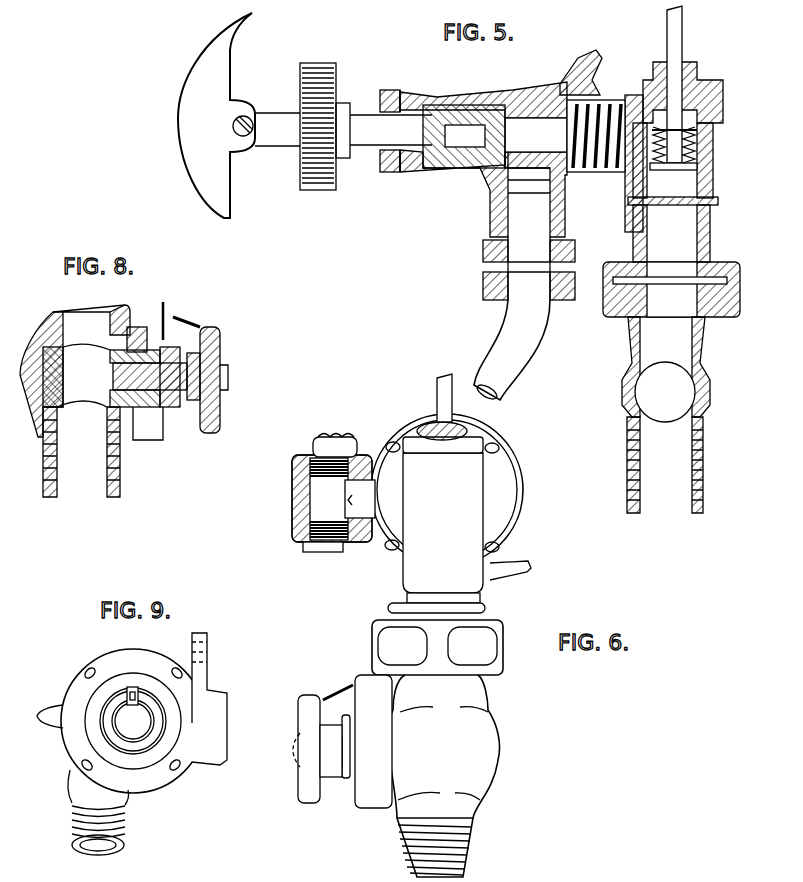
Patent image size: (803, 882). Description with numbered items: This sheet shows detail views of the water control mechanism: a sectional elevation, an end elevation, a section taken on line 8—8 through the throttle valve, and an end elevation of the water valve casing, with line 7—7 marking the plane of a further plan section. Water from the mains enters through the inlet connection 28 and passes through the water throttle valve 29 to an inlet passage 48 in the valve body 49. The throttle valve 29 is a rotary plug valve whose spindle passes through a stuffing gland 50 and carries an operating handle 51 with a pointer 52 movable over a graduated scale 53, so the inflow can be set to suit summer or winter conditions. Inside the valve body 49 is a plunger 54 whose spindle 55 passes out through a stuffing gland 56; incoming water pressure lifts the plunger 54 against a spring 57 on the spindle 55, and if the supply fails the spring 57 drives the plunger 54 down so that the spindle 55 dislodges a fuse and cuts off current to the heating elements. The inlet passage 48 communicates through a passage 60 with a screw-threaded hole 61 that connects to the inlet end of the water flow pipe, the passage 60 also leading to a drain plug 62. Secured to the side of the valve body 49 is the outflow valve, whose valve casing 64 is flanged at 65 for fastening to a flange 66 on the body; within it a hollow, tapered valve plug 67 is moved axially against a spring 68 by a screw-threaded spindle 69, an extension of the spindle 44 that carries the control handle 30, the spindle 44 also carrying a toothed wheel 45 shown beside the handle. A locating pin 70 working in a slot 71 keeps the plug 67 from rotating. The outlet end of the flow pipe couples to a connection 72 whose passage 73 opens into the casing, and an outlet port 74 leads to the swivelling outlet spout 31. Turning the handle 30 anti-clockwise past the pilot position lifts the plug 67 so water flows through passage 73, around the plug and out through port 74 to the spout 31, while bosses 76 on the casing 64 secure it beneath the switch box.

In FIG. 5, the section line 7— 7 is at (175, 118).
In FIG. 5, the section line 8— 8 is at (667, 335).
In FIG. 5, the inlet connection 28 is at (673, 495).
In FIG. 8, the inlet connection 28 is at (113, 488).
In FIG. 6, the inlet connection 28 is at (470, 847).
In FIG. 5, the water throttle valve 29 is at (697, 390).
In FIG. 8, the water throttle valve 29 is at (53, 392).
In FIG. 5, the control handle 30 is at (192, 168).
In FIG. 5, the swivelling outlet spout 31 is at (533, 358).
In FIG. 5, the spindle 44 is at (277, 137).
In FIG. 5, the knurled wheel 45 is at (314, 190).
In FIG. 5, the inlet passage 48 is at (680, 240).
In FIG. 5, the valve body 49 is at (693, 167).
In FIG. 6, the valve body 49 is at (473, 535).
In FIG. 8, the stuffing gland 50 is at (173, 407).
In FIG. 6, the stuffing gland 50 is at (347, 778).
In FIG. 8, the operating handle 51 is at (210, 433).
In FIG. 6, the operating handle 51 is at (307, 720).
In FIG. 8, the pointer 52 is at (203, 328).
In FIG. 6, the pointer 52 is at (332, 689).
In FIG. 8, the graduated scale 53 is at (165, 302).
In FIG. 6, the graduated scale 53 is at (357, 678).
In FIG. 5, the plunger 54 is at (717, 147).
In FIG. 5, the spindle 55 is at (682, 24).
In FIG. 6, the spindle 55 is at (437, 387).
In FIG. 5, the stuffing gland 56 is at (700, 82).
In FIG. 6, the stuffing gland 56 is at (467, 435).
In FIG. 5, the spring 57 is at (700, 132).
In FIG. 6, the passage 60 is at (362, 512).
In FIG. 6, the screw-threaded hole 61 is at (292, 465).
In FIG. 6, the drain plug 62 is at (315, 549).
In FIG. 5, the valve casing 64 is at (458, 168).
In FIG. 5, the flange 65 is at (585, 70).
In FIG. 9, the flange 65 is at (75, 690).
In FIG. 5, the flange 66 is at (600, 65).
In FIG. 6, the flange 66 is at (513, 465).
In FIG. 5, the hollow valve plug 67 is at (493, 116).
In FIG. 9, the hollow valve plug 67 is at (110, 730).
In FIG. 5, the spring 68 is at (578, 175).
In FIG. 5, the screw-threaded spindle 69 is at (423, 167).
In FIG. 9, the locating pin 70 is at (137, 690).
In FIG. 9, the slot 71 is at (125, 690).
In FIG. 9, the connection 72 is at (120, 800).
In FIG. 9, the passage 73 is at (98, 846).
In FIG. 5, the outlet port 74 is at (488, 195).
In FIG. 9, the bosses 76 is at (200, 635).